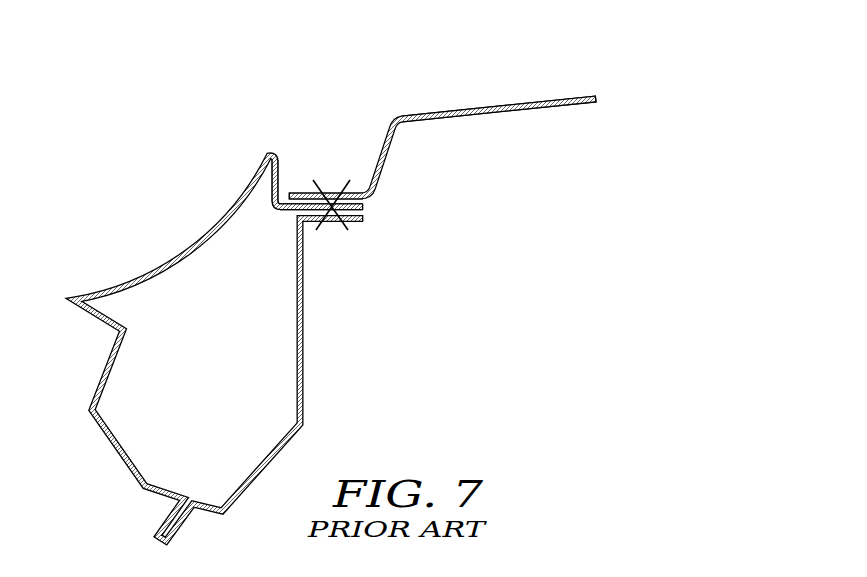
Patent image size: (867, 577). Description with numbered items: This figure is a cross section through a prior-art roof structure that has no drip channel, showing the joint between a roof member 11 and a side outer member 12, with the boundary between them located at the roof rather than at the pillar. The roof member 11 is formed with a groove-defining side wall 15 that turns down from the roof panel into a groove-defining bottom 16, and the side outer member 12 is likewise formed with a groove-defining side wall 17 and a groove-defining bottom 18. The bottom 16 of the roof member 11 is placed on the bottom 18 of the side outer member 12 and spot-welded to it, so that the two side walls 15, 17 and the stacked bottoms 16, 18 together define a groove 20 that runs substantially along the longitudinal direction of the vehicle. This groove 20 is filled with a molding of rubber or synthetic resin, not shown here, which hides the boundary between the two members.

The roof member 11 is at (505, 95).
The side outer member 12 is at (148, 186).
The groove-defining side wall 15 is at (378, 132).
The groove-defining bottom 16 is at (300, 192).
The groove-defining side wall 17 is at (280, 157).
The groove-defining bottom 18 is at (355, 200).
The groove 20 is at (380, 40).